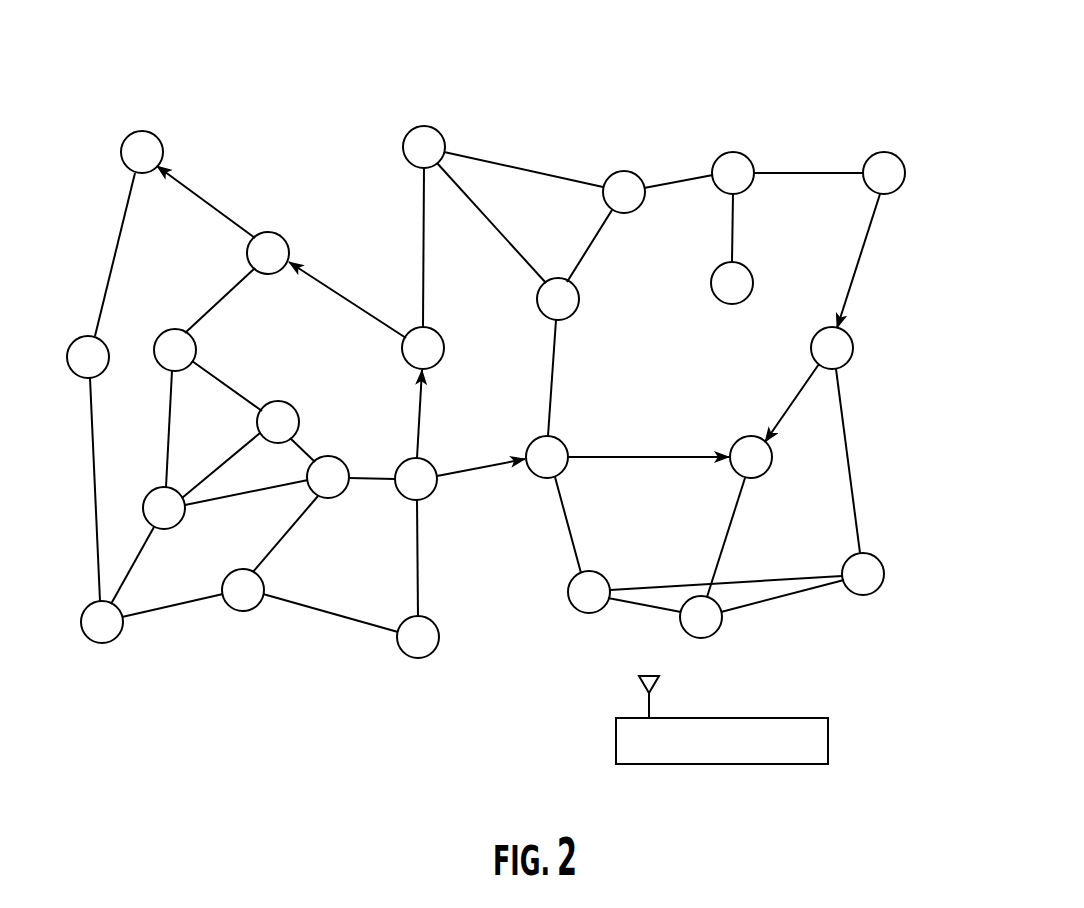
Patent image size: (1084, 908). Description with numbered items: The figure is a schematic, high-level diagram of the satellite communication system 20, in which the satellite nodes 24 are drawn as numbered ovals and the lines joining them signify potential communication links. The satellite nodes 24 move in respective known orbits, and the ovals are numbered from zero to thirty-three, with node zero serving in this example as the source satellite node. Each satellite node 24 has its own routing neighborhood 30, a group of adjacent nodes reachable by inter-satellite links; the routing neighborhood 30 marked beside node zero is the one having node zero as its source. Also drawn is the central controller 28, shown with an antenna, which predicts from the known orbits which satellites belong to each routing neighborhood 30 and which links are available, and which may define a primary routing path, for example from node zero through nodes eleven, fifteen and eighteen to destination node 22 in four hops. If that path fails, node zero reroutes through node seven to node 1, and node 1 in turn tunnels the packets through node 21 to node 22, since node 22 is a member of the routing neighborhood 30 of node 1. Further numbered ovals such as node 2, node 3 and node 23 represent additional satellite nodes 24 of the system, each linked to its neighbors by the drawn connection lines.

The satellite communication system 20 is at (501, 344).
The satellite nodes 24 is at (513, 177).
The satellite node 21 is at (117, 159).
The destination satellite node 22 is at (77, 335).
The destination node 3 23 is at (92, 606).
The satellite node 1 is at (909, 170).
The node 22 label 2 is at (852, 348).
The node 23 label 3 is at (880, 574).
The routing neighborhood 30 is at (409, 356).
The central controller 28 is at (750, 720).